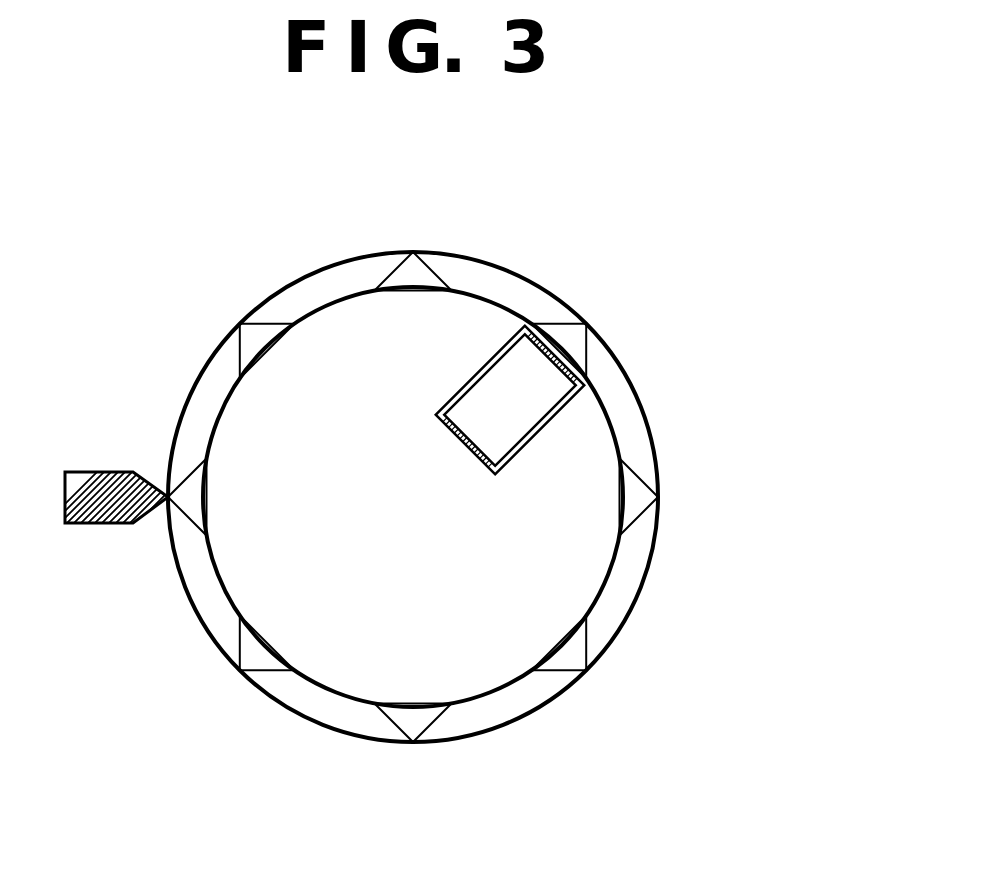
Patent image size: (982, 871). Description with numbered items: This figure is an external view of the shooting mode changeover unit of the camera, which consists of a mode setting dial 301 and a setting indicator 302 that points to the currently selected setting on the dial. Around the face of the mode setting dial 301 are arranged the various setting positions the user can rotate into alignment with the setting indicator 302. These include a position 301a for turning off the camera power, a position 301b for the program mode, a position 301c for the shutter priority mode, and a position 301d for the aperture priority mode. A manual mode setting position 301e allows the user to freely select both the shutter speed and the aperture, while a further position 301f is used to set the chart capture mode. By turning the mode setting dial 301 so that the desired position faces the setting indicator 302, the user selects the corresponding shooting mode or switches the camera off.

The mode setting dial 301 is at (502, 265).
The position for turning off camera power 301a is at (585, 356).
The position for program mode 301b is at (603, 460).
The position for shutter priority mode 301c is at (563, 602).
The position for aperture priority 301d is at (448, 672).
The manual mode setting position 301e is at (312, 645).
The position for setting the chart capture mode 301f is at (232, 467).
The setting indicator 302 is at (98, 525).